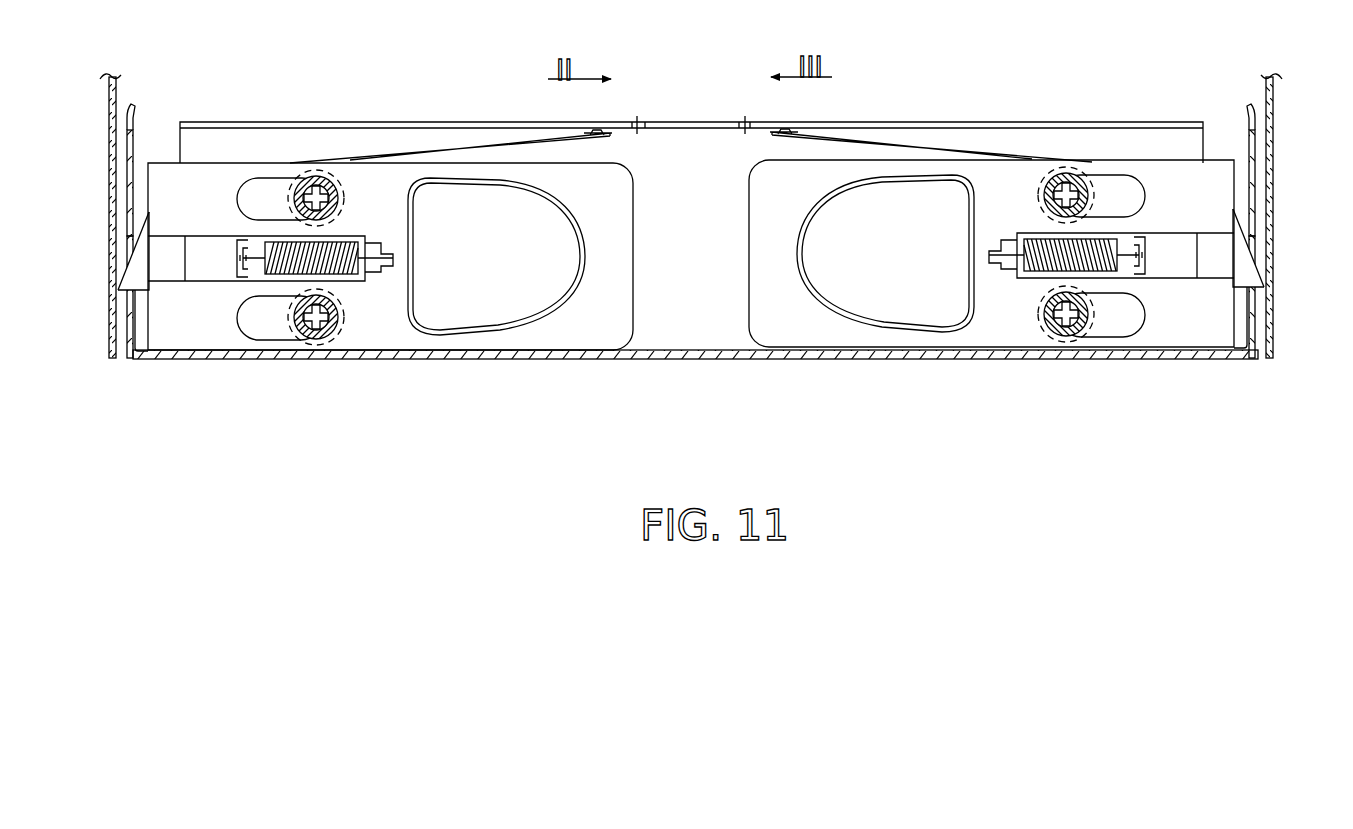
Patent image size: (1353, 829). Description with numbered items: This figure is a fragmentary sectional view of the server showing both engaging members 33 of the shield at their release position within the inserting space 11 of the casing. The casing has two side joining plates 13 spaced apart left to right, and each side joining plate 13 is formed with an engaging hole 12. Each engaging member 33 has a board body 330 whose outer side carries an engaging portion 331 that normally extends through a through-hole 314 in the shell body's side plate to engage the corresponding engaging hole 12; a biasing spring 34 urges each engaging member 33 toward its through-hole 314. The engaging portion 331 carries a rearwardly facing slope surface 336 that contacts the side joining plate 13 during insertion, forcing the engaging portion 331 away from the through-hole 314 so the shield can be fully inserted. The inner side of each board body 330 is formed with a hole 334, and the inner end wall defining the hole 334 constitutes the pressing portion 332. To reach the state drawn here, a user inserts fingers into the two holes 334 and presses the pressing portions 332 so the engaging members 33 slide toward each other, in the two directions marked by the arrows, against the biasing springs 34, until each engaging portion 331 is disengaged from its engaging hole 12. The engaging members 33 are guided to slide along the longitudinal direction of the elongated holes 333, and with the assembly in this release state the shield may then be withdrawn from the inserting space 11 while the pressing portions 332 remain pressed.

The inserting space 11 is at (135, 97).
The side joining plate 13 is at (112, 158).
The through-hole 314 is at (129, 203).
The engaging hole 12 is at (116, 262).
The engaging portion 331 is at (130, 278).
The slope surface 336 is at (131, 254).
The engaging member 33 is at (638, 333).
The pressing portion 332 is at (610, 253).
The board body 330 is at (557, 323).
The elongated hole 333 is at (224, 339).
The biasing spring 34 is at (350, 252).
The hole 334 is at (471, 216).